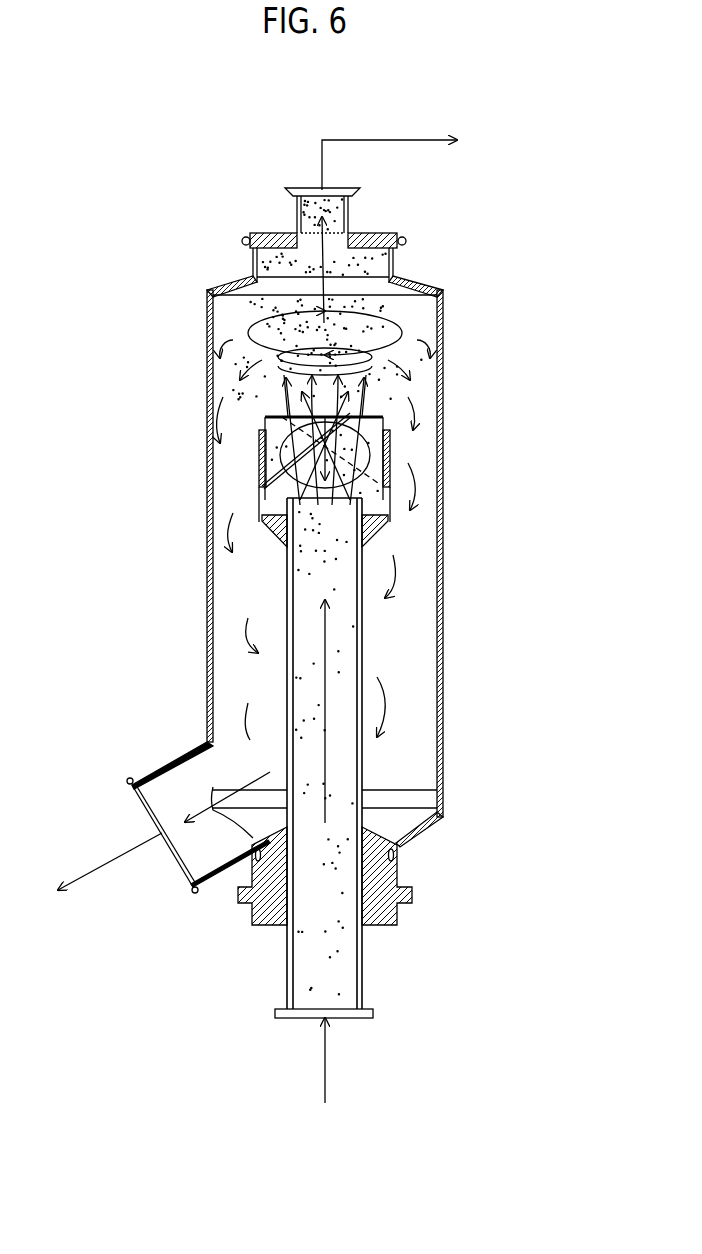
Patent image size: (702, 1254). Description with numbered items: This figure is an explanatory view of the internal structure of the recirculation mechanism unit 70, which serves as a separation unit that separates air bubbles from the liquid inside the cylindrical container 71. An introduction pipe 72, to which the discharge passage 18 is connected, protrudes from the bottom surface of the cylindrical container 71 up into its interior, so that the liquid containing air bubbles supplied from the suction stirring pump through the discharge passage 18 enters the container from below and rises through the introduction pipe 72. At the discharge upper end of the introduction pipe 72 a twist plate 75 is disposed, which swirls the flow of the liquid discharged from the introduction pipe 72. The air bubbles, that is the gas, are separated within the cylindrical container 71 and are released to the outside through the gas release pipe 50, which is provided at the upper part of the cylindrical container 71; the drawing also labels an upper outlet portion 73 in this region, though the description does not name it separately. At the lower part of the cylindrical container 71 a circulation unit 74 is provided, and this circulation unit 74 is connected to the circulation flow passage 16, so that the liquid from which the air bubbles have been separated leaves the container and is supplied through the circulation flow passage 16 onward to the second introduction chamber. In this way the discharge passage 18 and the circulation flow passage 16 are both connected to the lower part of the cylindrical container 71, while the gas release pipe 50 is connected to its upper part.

The circulation flow passage 16 is at (107, 863).
The discharge passage 18 is at (325, 1055).
The gas release pipe 50 is at (378, 141).
The recirculation mechanism unit 70 is at (430, 265).
The cylindrical container 71 is at (207, 438).
The introduction pipe 72 is at (362, 645).
The outlet nozzle 73 is at (318, 190).
The circulation unit 74 is at (180, 790).
The twist plate 75 is at (273, 412).